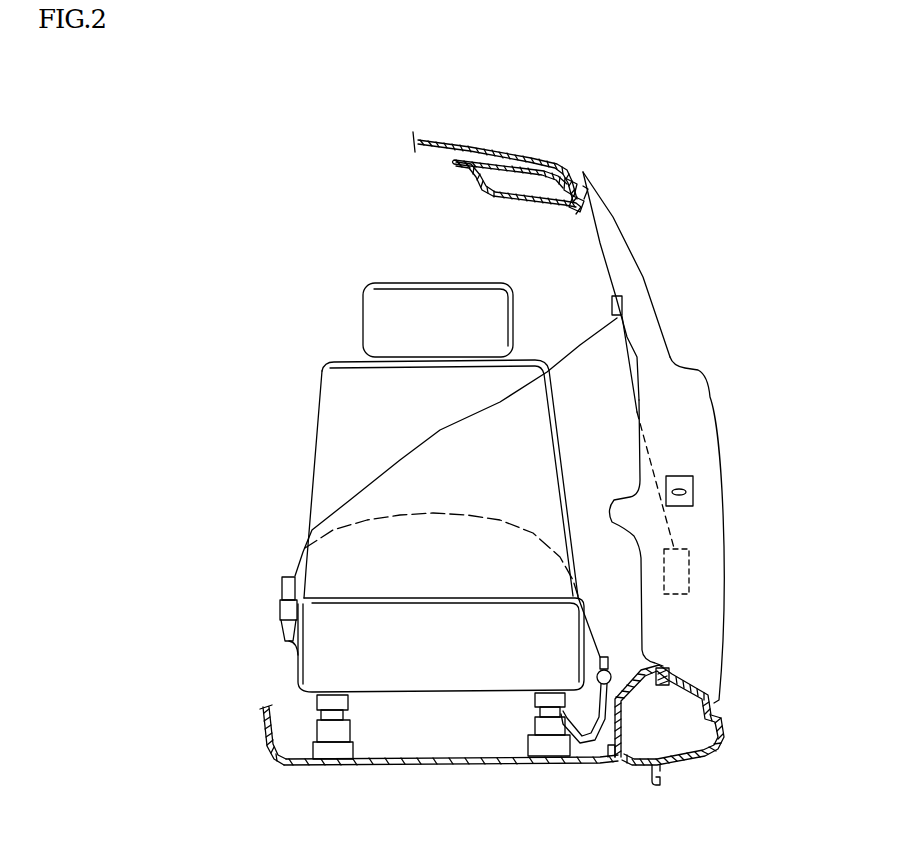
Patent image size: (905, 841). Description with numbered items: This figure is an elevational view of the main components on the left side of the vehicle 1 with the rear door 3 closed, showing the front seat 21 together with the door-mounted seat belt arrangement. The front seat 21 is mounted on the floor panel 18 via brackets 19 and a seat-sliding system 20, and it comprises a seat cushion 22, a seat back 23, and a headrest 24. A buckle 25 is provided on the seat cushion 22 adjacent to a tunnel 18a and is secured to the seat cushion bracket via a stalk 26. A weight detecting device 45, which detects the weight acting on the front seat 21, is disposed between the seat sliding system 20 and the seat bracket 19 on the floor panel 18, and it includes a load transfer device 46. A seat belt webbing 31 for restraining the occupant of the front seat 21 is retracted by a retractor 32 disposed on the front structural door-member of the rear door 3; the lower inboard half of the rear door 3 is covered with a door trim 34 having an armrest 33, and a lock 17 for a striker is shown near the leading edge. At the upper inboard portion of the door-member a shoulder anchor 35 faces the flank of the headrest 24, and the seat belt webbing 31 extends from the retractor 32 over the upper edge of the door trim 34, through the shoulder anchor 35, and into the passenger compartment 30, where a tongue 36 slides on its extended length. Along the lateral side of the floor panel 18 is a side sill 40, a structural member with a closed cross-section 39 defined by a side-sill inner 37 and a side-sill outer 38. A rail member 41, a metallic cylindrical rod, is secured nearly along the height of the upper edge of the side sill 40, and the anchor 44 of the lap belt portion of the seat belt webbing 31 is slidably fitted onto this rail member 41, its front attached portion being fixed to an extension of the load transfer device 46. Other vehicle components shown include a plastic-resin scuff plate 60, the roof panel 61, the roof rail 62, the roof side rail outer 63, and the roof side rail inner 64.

The vehicle 1 is at (658, 262).
The rear door 3 is at (710, 393).
The lock 17 is at (678, 473).
The floor panel 18 is at (428, 766).
The tunnel 18a is at (266, 740).
The bracket 19 is at (354, 751).
The seat-sliding system 20 is at (346, 696).
The front seat 21 is at (300, 403).
The seat cushion 22 is at (420, 641).
The seat back 23 is at (313, 450).
The headrest 24 is at (366, 300).
The buckle 25 is at (280, 611).
The stalk 26 is at (297, 666).
The passenger compartment 30 is at (375, 249).
The seat belt webbing 31 is at (440, 430).
The retractor 32 is at (689, 568).
The armrest 33 is at (614, 522).
The door trim 34 is at (642, 590).
The shoulder anchor 35 is at (612, 306).
The tongue 36 is at (282, 590).
The side-sill inner 37 is at (630, 766).
The side-sill outer 38 is at (705, 756).
The closed cross-section 39 is at (642, 731).
The side sill 40 is at (742, 714).
The rail member 41 is at (588, 693).
The anchor 44 is at (609, 668).
The weight detecting device 45 is at (533, 725).
The load transfer device 46 is at (350, 718).
The scuff plate 60 is at (666, 668).
The roof panel 61 is at (437, 141).
The roof rail 62 is at (552, 162).
The roof side rail outer 63 is at (497, 160).
The roof side rail inner 64 is at (502, 199).